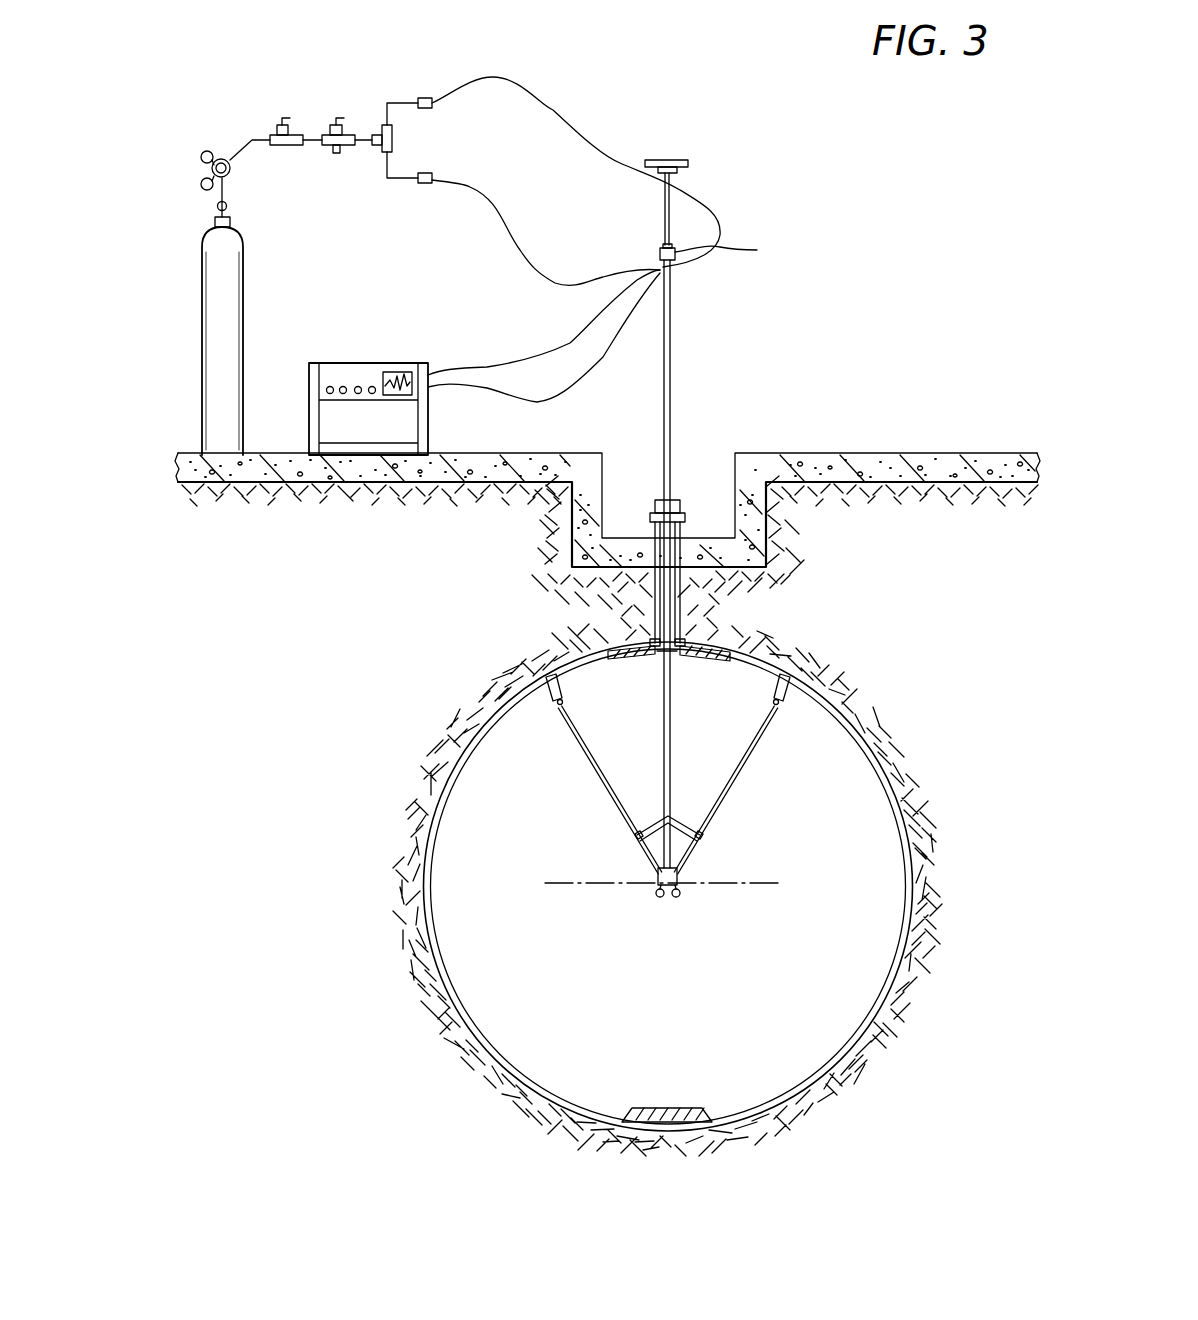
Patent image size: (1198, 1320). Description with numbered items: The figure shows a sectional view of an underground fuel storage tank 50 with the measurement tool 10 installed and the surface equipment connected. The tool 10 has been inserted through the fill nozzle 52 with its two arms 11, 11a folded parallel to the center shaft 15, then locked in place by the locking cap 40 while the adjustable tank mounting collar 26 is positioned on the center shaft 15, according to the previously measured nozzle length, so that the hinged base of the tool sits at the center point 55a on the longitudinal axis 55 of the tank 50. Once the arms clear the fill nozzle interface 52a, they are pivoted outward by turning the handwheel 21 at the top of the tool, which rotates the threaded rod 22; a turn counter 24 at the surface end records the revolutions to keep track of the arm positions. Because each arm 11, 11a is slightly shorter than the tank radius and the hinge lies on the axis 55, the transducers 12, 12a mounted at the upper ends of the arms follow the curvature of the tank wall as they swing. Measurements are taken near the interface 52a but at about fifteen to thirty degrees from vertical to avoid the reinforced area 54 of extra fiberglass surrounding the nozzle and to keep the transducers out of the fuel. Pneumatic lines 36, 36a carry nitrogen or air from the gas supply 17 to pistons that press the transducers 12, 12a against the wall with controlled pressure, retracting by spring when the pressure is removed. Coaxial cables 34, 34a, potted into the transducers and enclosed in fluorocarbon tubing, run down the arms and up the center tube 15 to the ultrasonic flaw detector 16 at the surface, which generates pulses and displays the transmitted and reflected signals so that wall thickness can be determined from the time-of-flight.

The tool 10 is at (563, 828).
The arm 11 is at (578, 748).
The arm 11a is at (740, 777).
The transducer 12 is at (540, 698).
The transducer 12a is at (792, 692).
The center shaft 15 is at (673, 333).
The ultrasonic flaw detector 16 is at (378, 362).
The supply 17 is at (243, 318).
The handwheel 21 is at (683, 158).
The threaded rod 22 is at (670, 223).
The turn counter 24 is at (738, 254).
The adjustable tank mounting collar 26 is at (673, 497).
The coaxial cable 34 is at (560, 393).
The coaxial cable 34a is at (570, 343).
The pneumatic line 36 is at (492, 203).
The pneumatic line 36a is at (555, 112).
The locking cap 40 is at (687, 513).
The underground fuel storage tank 50 is at (916, 840).
The fill nozzle 52 is at (683, 603).
The fill nozzle interface 52a is at (656, 662).
The reinforced area 54 is at (725, 655).
The longitudinal axis 55 is at (692, 896).
The center point 55a is at (661, 890).